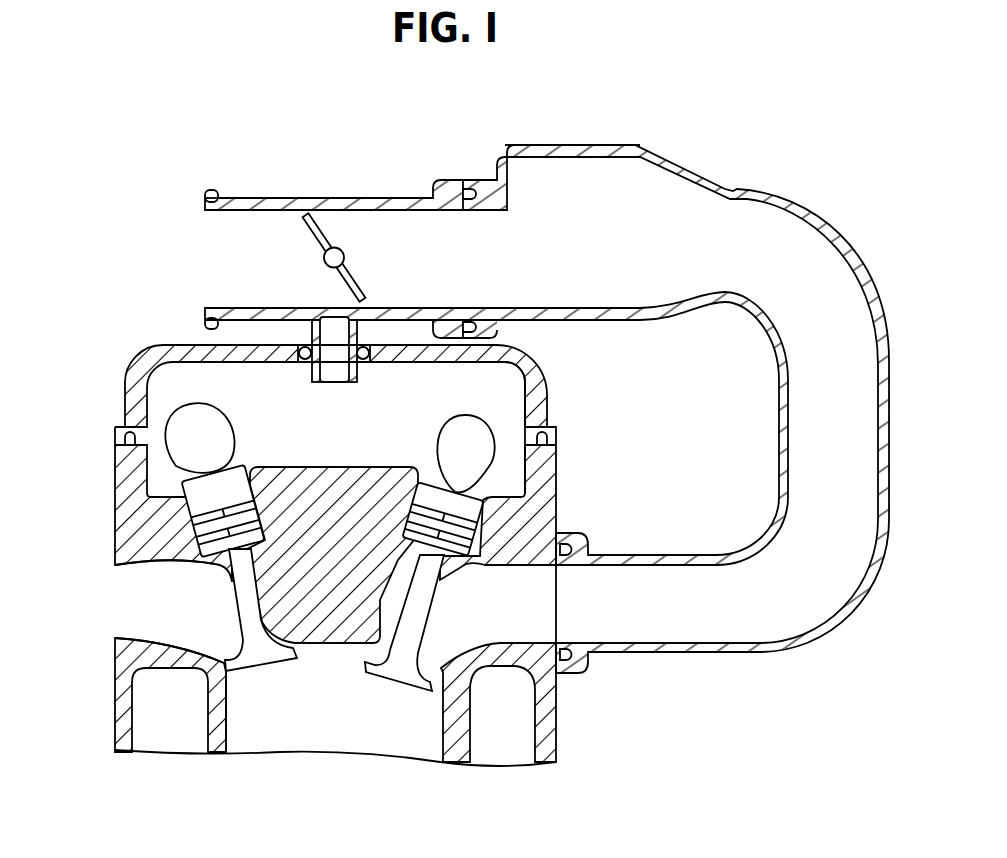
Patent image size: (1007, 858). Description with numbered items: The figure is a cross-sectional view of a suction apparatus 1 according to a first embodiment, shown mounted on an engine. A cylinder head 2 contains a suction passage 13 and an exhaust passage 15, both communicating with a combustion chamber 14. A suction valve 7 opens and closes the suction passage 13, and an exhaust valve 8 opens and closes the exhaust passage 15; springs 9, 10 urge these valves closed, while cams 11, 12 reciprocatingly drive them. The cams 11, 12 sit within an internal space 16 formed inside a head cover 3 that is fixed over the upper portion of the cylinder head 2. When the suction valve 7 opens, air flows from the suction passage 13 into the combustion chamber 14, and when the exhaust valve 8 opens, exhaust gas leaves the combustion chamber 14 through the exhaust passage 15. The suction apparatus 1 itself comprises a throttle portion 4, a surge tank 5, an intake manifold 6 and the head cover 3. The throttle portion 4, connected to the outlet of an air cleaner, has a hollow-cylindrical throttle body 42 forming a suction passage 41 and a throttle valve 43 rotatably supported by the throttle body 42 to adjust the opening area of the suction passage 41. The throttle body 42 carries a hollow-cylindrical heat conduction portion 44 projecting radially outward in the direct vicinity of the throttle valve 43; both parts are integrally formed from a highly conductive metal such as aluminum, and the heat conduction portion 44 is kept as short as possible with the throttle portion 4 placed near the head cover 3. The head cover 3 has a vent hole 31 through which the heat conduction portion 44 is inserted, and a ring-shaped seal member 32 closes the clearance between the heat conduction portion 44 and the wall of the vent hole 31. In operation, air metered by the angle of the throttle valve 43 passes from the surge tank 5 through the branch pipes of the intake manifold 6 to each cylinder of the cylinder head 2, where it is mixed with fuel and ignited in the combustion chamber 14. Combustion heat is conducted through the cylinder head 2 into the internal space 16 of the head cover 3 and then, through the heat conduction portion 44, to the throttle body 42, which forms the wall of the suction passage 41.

The suction apparatus 1 is at (724, 161).
The cylinder head 2 is at (140, 548).
The head cover 3 is at (533, 398).
The throttle portion 4 is at (297, 175).
The surge tank 5 is at (597, 146).
The intake manifold 6 is at (693, 650).
The suction valve 7 is at (403, 657).
The exhaust valve 8 is at (240, 608).
The spring 9 is at (465, 542).
The spring 10 is at (200, 527).
The cam 11 is at (474, 456).
The cam 12 is at (178, 428).
The suction passage 13 is at (498, 622).
The combustion chamber 14 is at (292, 720).
The exhaust passage 15 is at (133, 585).
The internal space 16 is at (424, 385).
The vent hole 31 is at (303, 362).
The seal member 32 is at (300, 347).
The suction passage 41 is at (395, 245).
The throttle body 42 is at (342, 197).
The throttle valve 43 is at (305, 222).
The heat conduction portion 44 is at (318, 327).